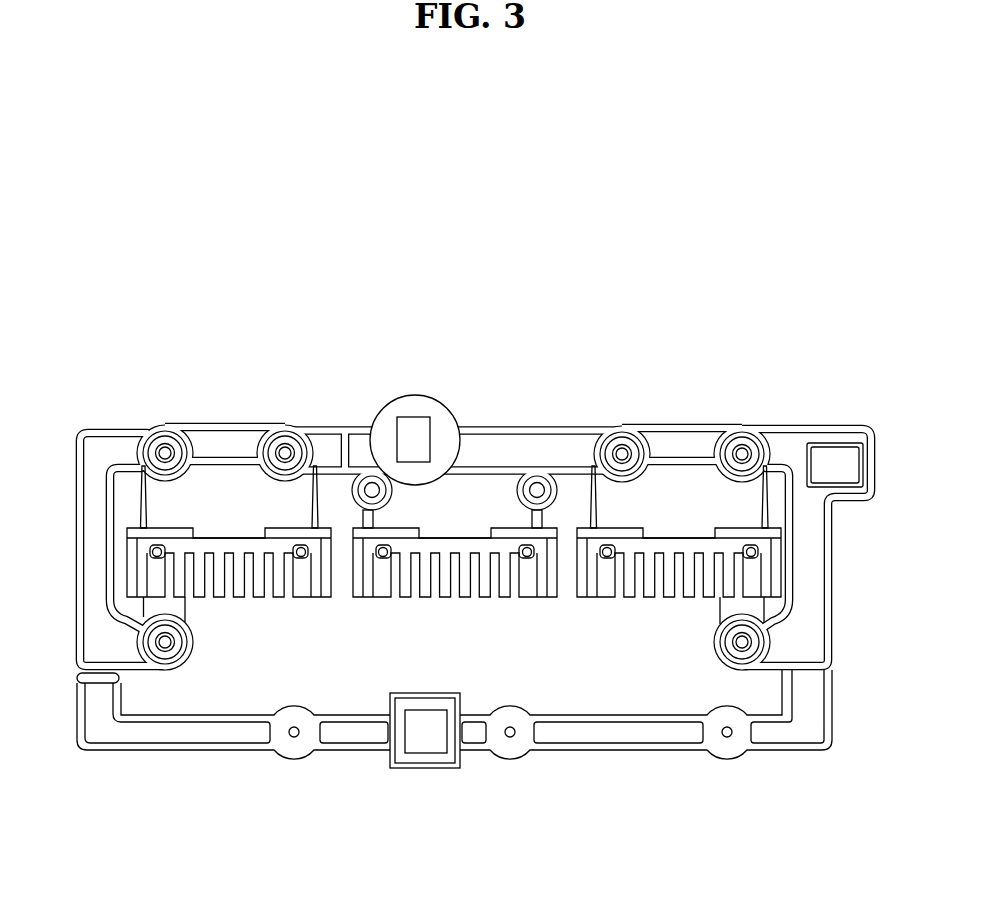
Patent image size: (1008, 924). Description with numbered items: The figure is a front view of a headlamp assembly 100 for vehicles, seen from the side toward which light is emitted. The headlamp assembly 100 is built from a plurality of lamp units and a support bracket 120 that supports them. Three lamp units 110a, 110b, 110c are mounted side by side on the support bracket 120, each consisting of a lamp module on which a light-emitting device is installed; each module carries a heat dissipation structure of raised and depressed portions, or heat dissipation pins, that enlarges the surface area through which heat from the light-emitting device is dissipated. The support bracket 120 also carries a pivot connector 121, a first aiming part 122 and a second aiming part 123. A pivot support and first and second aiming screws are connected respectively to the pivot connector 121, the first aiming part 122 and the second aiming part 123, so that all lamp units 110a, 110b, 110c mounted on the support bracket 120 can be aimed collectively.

The headlamp assembly 100 is at (352, 245).
The lamp unit 110a is at (226, 484).
The lamp unit 110b is at (490, 487).
The lamp unit 110c is at (688, 487).
The support bracket 120 is at (590, 730).
The pivot connector 121 is at (418, 438).
The first aiming part 122 is at (834, 457).
The second aiming part 123 is at (432, 738).